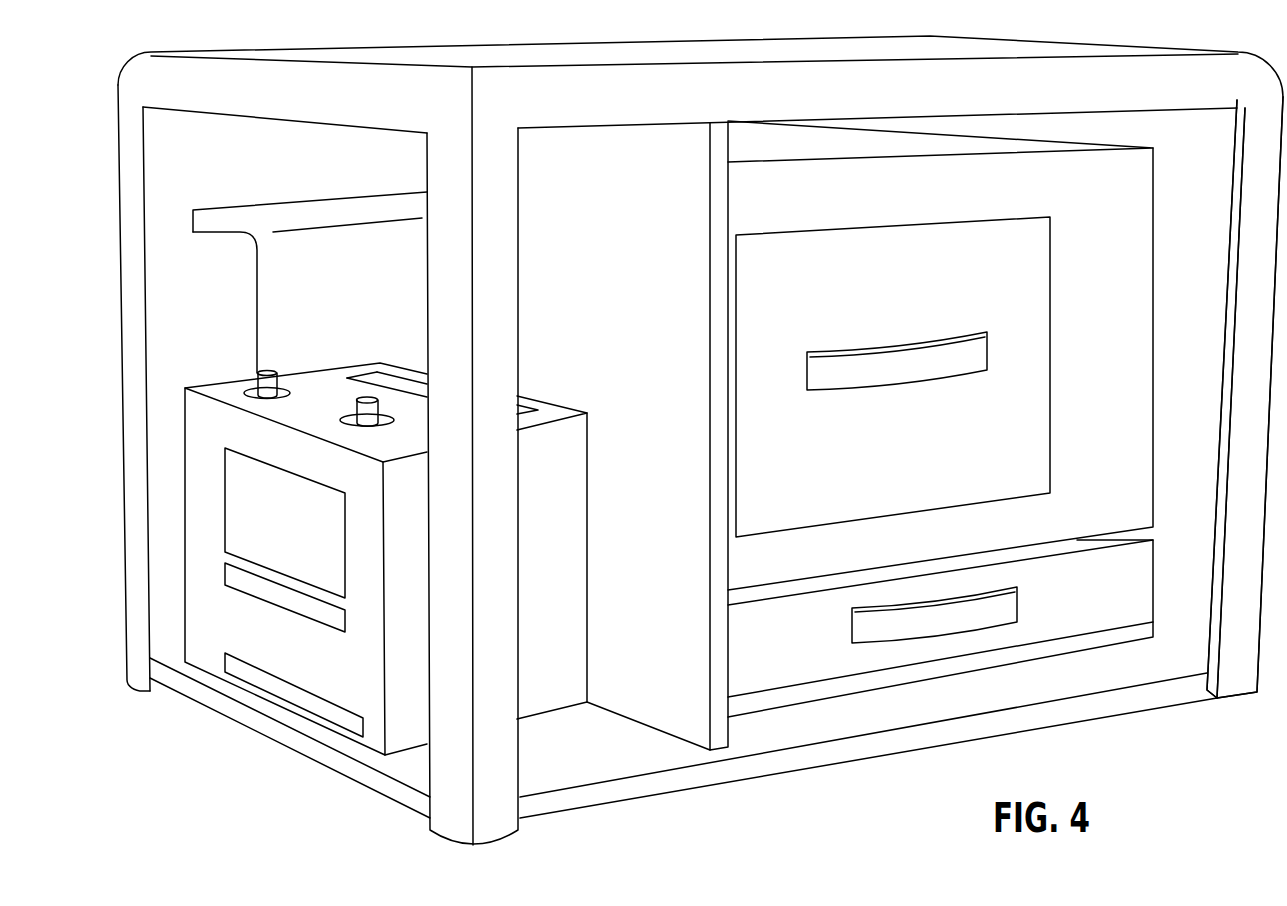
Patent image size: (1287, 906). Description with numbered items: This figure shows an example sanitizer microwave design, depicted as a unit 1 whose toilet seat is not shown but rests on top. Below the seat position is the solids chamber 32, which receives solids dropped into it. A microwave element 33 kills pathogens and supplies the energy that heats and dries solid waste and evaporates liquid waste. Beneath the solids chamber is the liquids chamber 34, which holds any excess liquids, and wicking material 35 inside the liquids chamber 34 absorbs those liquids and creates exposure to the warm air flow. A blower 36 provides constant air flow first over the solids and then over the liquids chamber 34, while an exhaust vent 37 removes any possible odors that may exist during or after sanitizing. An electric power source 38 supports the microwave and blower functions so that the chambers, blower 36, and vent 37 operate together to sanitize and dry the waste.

The housing frame 1 is at (851, 56).
The solids chamber 32 is at (835, 328).
The microwave element 33 is at (1118, 380).
The liquids chamber 34 is at (1084, 612).
The wicking material 35 is at (885, 637).
The blower 36 is at (356, 291).
The exhaust vent 37 is at (1197, 607).
The electric power source 38 is at (423, 605).